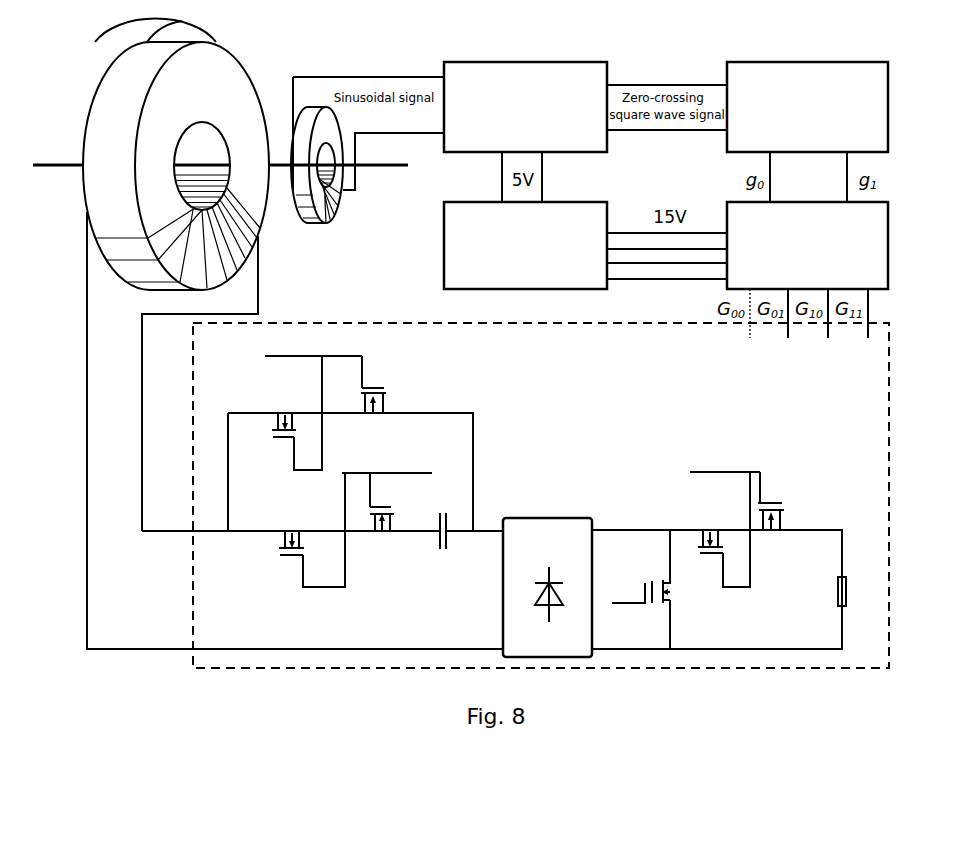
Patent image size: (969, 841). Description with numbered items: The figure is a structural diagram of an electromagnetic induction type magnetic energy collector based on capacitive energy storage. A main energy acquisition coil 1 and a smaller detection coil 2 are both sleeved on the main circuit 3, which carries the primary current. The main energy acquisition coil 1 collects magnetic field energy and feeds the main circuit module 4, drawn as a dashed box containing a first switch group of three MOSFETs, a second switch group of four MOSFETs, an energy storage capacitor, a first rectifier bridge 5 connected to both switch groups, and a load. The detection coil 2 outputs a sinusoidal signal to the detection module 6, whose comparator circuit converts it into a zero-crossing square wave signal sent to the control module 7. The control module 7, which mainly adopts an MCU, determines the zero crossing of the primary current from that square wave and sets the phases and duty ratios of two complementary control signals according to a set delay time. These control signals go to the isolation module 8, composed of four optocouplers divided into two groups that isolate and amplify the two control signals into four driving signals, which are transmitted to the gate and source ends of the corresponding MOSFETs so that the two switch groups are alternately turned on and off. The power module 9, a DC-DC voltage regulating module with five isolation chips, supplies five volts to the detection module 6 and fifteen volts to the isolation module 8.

The main energy acquisition coil 1 is at (176, 154).
The detection coil 2 is at (318, 183).
The main circuit 3 is at (220, 147).
The main circuit module 4 is at (515, 495).
The first rectifier bridge 5 is at (547, 587).
The detection module 6 is at (525, 107).
The control module 7 is at (807, 107).
The isolation module 8 is at (807, 245).
The power module 9 is at (525, 245).